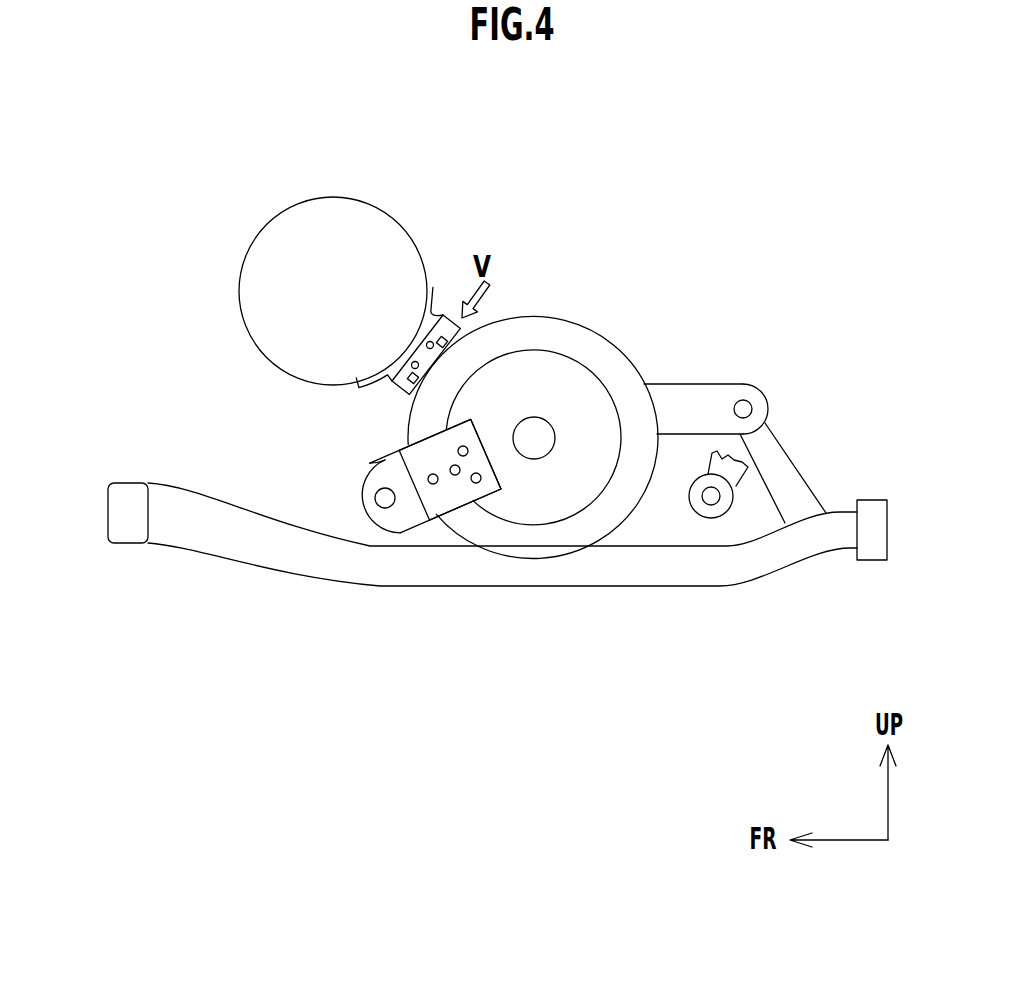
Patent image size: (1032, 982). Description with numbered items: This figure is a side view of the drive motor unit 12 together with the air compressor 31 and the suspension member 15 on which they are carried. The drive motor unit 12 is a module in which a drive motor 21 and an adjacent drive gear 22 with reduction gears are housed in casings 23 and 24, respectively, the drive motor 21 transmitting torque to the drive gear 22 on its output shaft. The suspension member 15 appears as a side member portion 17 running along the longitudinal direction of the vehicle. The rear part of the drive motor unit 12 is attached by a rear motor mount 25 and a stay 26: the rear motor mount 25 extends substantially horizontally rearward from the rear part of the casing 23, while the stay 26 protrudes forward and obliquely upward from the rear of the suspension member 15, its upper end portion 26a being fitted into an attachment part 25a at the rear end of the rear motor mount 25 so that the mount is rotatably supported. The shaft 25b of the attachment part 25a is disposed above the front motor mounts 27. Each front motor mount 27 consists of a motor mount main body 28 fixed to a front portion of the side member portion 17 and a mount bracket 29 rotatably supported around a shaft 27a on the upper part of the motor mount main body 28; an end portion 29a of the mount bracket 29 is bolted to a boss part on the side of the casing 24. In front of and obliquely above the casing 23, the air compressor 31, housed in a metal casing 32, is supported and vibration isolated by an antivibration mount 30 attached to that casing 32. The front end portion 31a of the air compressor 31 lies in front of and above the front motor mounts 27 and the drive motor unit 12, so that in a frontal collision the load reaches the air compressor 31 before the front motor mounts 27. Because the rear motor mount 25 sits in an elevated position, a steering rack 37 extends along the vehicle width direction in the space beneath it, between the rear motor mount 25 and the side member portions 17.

The drive motor unit 12 is at (564, 361).
The suspension member 15 is at (496, 579).
The side member portion 17 is at (650, 572).
The drive motor 21 is at (564, 395).
The drive gear 22 is at (533, 354).
The casing 23 is at (603, 330).
The casing 24 is at (552, 365).
The rear motor mount 25 is at (759, 363).
The attachment part 25a is at (809, 363).
The shaft 25b is at (753, 407).
The stay 26 is at (780, 463).
The upper end portion 26a is at (745, 392).
The front motor mount 27 is at (391, 463).
The shaft 27a is at (385, 498).
The motor mount main body 28 is at (363, 537).
The mount bracket 29 is at (475, 462).
The end portion 29a is at (458, 430).
The antivibration mount 30 is at (443, 318).
The air compressor 31 is at (279, 292).
The front end portion 31a is at (255, 237).
The casing 32 is at (300, 292).
The steering rack 37 is at (735, 502).